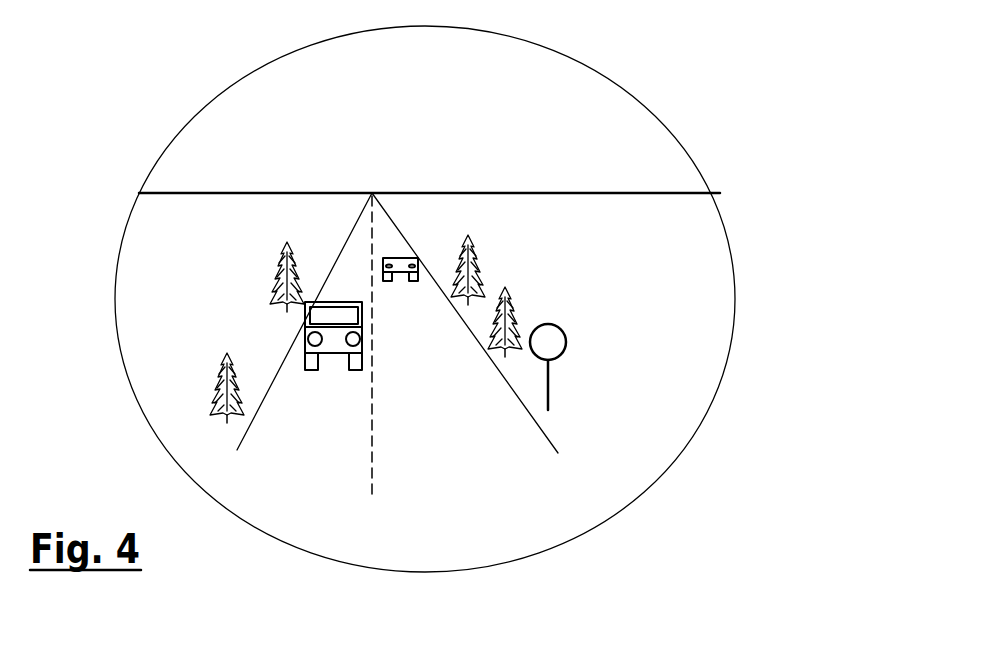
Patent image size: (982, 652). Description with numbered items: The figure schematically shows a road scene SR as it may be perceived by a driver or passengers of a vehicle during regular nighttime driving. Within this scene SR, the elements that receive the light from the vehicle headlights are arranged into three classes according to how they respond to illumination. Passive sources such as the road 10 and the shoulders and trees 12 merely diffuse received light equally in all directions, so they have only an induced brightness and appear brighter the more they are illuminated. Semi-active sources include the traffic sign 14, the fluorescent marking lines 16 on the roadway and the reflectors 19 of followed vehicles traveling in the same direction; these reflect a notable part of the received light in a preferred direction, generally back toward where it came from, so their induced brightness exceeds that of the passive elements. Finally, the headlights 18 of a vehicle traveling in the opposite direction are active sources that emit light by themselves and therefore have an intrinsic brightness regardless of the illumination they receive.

The road 10 is at (485, 470).
The shoulders and trees 12 is at (225, 435).
The traffic sign 14 is at (566, 335).
The marking lines 16 is at (373, 480).
The headlights 18 is at (300, 333).
The reflectors of followed vehicles 19 is at (408, 257).
The road scene SR is at (688, 100).